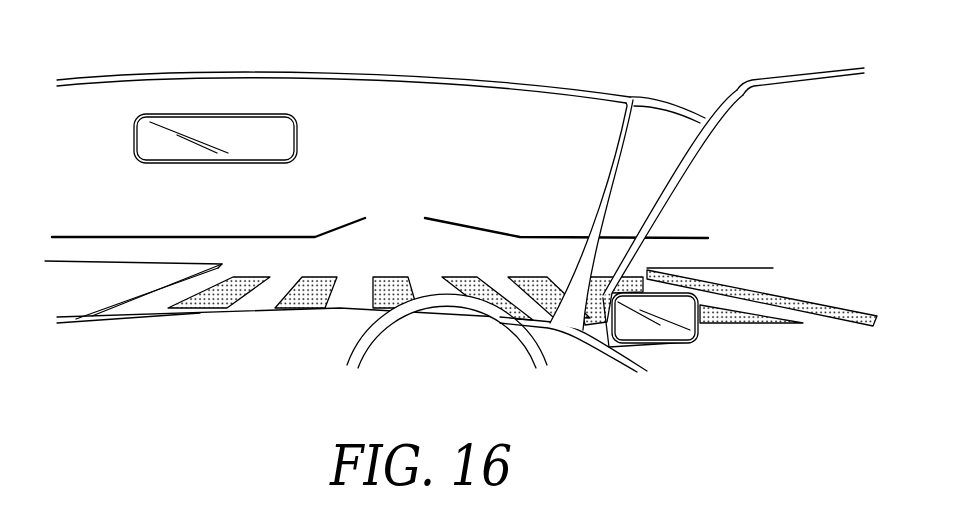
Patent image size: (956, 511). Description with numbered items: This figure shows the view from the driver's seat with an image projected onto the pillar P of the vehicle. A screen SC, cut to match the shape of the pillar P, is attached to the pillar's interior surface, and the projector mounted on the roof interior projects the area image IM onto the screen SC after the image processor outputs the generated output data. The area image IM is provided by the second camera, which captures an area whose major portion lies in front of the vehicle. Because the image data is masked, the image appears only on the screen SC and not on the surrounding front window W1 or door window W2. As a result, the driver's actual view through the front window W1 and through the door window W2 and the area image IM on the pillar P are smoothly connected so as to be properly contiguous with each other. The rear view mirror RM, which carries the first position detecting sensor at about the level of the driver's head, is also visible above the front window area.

The front window W1 is at (441, 97).
The door window W2 is at (775, 97).
The rear view mirror RM is at (297, 137).
The pillar P is at (627, 118).
The screen SC is at (670, 148).
The area image IM is at (628, 212).